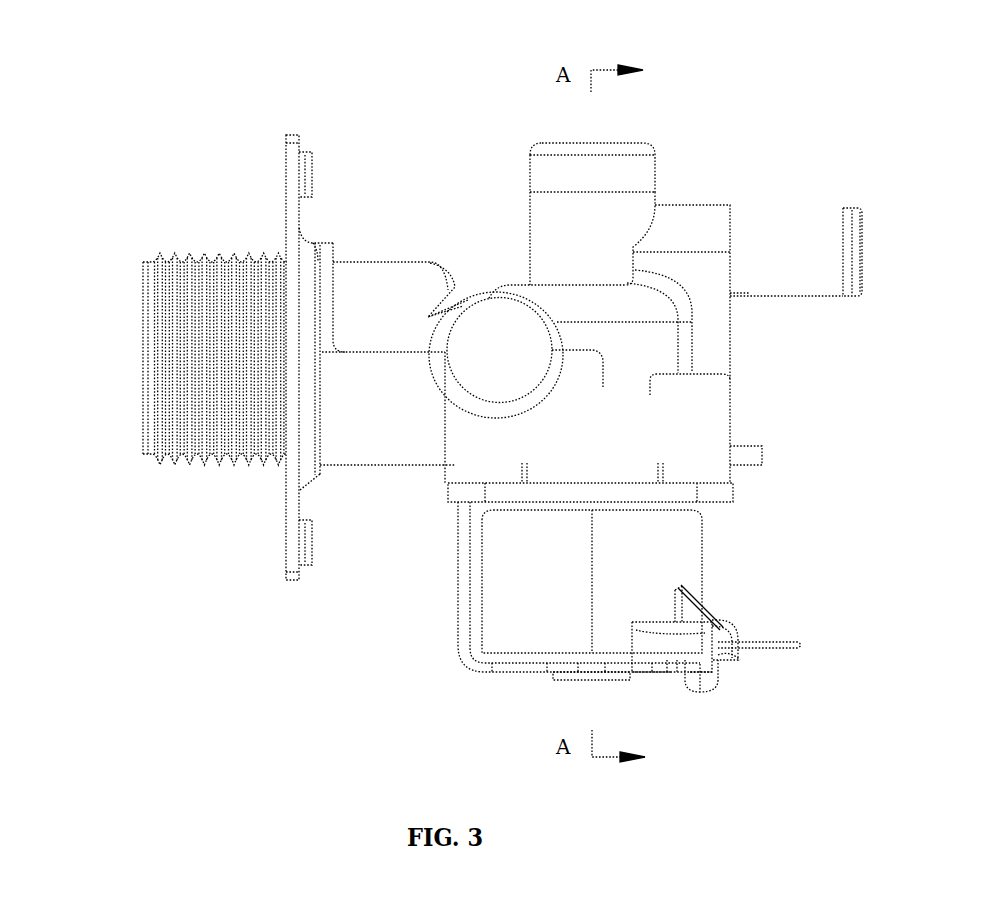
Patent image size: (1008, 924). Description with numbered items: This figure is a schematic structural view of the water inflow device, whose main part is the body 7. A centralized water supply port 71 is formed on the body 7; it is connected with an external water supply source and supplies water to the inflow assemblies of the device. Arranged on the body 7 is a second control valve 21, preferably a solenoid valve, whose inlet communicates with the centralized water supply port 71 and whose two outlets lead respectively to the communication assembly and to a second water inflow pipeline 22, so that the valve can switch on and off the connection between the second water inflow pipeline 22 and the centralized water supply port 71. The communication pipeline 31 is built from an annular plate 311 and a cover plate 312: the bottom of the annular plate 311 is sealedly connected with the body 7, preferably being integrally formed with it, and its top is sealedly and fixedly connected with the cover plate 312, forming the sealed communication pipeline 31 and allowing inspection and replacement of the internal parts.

The body 7 is at (398, 532).
The centralized water supply port 71 is at (136, 343).
The communication pipeline 31 is at (484, 180).
The annular plate 311 is at (550, 205).
The cover plate 312 is at (557, 142).
The second control valve 21 is at (635, 323).
The second water inflow pipeline 22 is at (760, 212).